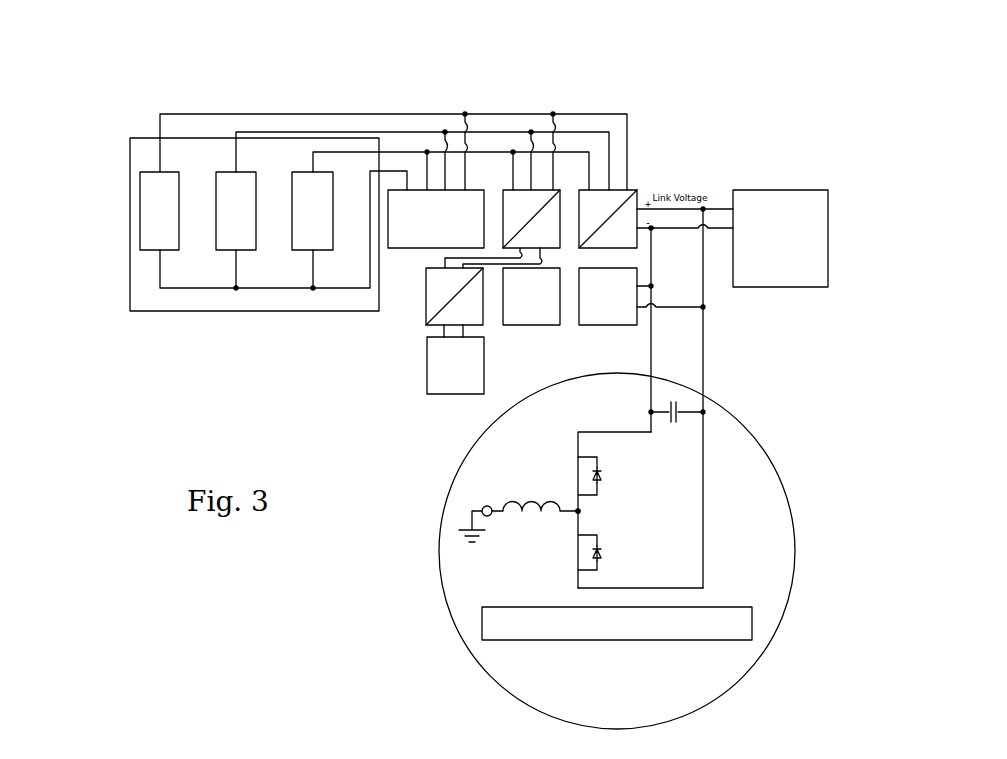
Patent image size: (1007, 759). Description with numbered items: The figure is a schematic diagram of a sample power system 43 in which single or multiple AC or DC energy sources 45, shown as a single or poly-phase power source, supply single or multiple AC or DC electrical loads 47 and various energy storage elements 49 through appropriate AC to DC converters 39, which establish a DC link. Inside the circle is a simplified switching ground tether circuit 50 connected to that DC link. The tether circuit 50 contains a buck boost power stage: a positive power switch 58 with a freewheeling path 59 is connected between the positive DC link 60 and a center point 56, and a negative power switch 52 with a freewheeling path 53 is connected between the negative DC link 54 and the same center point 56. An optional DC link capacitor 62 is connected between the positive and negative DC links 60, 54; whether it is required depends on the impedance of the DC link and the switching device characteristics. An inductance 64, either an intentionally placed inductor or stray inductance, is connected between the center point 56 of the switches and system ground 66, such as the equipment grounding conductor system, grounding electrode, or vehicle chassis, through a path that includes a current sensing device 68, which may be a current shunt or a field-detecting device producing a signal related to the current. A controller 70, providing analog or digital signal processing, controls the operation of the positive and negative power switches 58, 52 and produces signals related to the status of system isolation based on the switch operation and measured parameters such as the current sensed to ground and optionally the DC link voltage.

The AC to DC converters 39 is at (637, 197).
The power system 43 is at (118, 356).
The AC or DC energy sources 45 is at (140, 113).
The AC or DC electrical loads 47 is at (420, 248).
The energy storage elements 49 is at (782, 190).
The switching ground tether circuit 50 is at (423, 638).
The negative power switch 52 is at (575, 553).
The freewheeling path 53 is at (601, 547).
The negative DC link 54 is at (633, 588).
The center point 56 is at (580, 511).
The positive power switch 58 is at (575, 478).
The freewheeling path 59 is at (601, 468).
The positive DC link 60 is at (613, 432).
The DC link capacitor 62 is at (678, 410).
The inductance 64 is at (548, 507).
The system ground 66 is at (458, 535).
The current sensing device 68 is at (486, 506).
The controller 70 is at (712, 607).